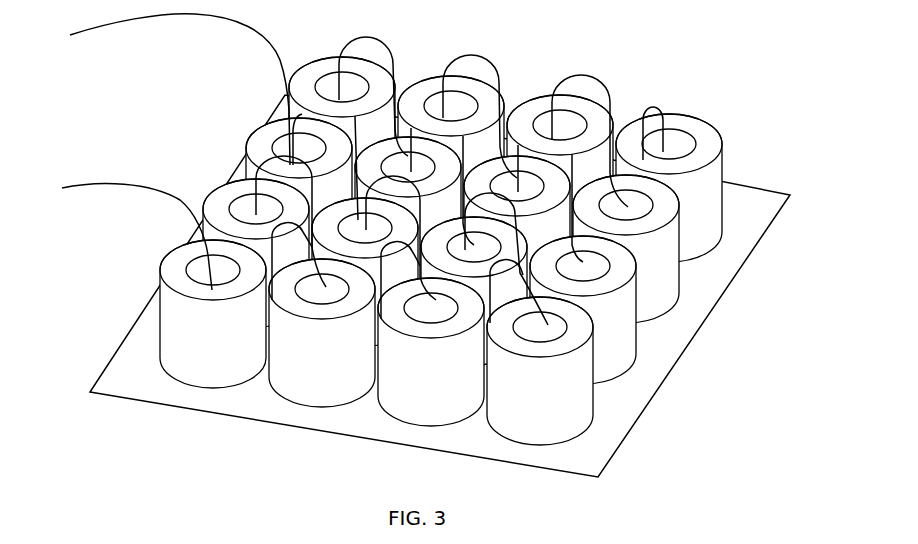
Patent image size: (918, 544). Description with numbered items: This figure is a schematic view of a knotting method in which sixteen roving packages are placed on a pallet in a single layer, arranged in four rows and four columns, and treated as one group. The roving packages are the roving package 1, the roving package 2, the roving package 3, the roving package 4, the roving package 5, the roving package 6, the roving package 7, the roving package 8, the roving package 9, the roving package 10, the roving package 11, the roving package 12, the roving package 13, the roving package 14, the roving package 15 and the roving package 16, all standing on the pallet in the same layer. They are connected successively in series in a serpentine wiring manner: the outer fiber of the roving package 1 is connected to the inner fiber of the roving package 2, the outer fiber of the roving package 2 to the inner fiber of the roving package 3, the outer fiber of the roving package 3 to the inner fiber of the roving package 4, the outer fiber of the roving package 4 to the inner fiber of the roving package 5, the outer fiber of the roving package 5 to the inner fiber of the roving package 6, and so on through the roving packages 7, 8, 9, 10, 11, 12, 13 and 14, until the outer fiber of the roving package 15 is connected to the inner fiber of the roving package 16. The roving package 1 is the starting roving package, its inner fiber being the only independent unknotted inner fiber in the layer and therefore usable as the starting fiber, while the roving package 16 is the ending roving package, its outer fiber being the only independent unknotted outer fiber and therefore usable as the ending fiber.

The roving package 1 is at (213, 314).
The roving package 2 is at (322, 333).
The roving package 3 is at (431, 352).
The roving package 4 is at (540, 371).
The roving package 5 is at (583, 310).
The roving package 6 is at (474, 291).
The roving package 7 is at (365, 272).
The roving package 8 is at (256, 253).
The roving package 9 is at (299, 192).
The roving package 10 is at (408, 211).
The roving package 11 is at (517, 230).
The roving package 12 is at (626, 249).
The roving package 13 is at (669, 188).
The roving package 14 is at (560, 169).
The roving package 15 is at (451, 150).
The roving package 16 is at (342, 131).